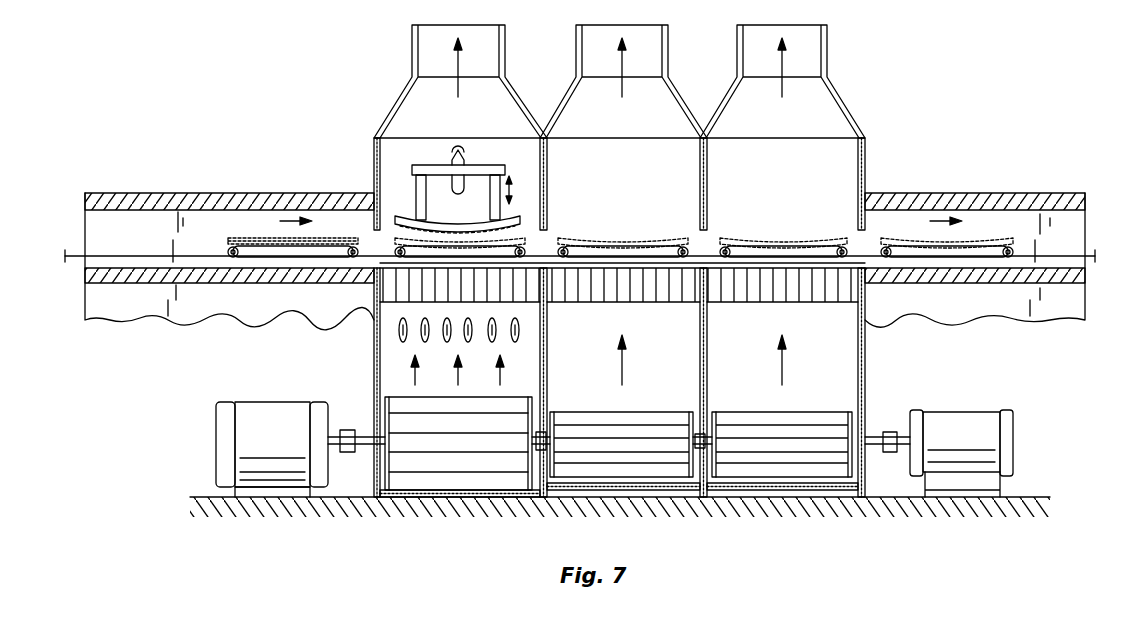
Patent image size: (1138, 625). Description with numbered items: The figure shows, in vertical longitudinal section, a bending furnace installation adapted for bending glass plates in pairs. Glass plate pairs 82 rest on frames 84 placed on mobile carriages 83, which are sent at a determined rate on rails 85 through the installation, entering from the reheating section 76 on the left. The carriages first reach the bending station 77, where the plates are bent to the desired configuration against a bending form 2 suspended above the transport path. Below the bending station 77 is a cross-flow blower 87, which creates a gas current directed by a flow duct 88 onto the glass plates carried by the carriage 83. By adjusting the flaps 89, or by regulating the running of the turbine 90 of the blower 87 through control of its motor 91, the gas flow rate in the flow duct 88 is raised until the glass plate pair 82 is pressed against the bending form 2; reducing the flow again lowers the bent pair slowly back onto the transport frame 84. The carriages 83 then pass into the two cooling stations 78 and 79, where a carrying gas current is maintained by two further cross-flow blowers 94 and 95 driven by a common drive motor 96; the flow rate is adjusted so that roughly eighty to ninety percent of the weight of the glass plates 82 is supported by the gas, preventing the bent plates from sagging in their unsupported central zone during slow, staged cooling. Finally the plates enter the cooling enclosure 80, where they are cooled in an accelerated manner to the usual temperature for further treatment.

The bending form 2 is at (400, 216).
The inlet tunnel 76 is at (158, 222).
The bending station 77 is at (393, 150).
The cooling station 78 is at (623, 261).
The cooling station 79 is at (782, 261).
The cooling enclosure 80 is at (1030, 222).
The glass plate pair 82 is at (238, 236).
The mobile carriage 83 is at (308, 258).
The frame 84 is at (247, 258).
The rails 85 is at (66, 262).
The cross-flow blower 87 is at (382, 390).
The flow duct 88 is at (392, 345).
The flaps 89 is at (515, 342).
The turbine 90 is at (408, 494).
The motor 91 is at (273, 410).
The cross-flow blower 94 is at (651, 412).
The cross-flow blower 95 is at (815, 412).
The drive motor 96 is at (960, 420).